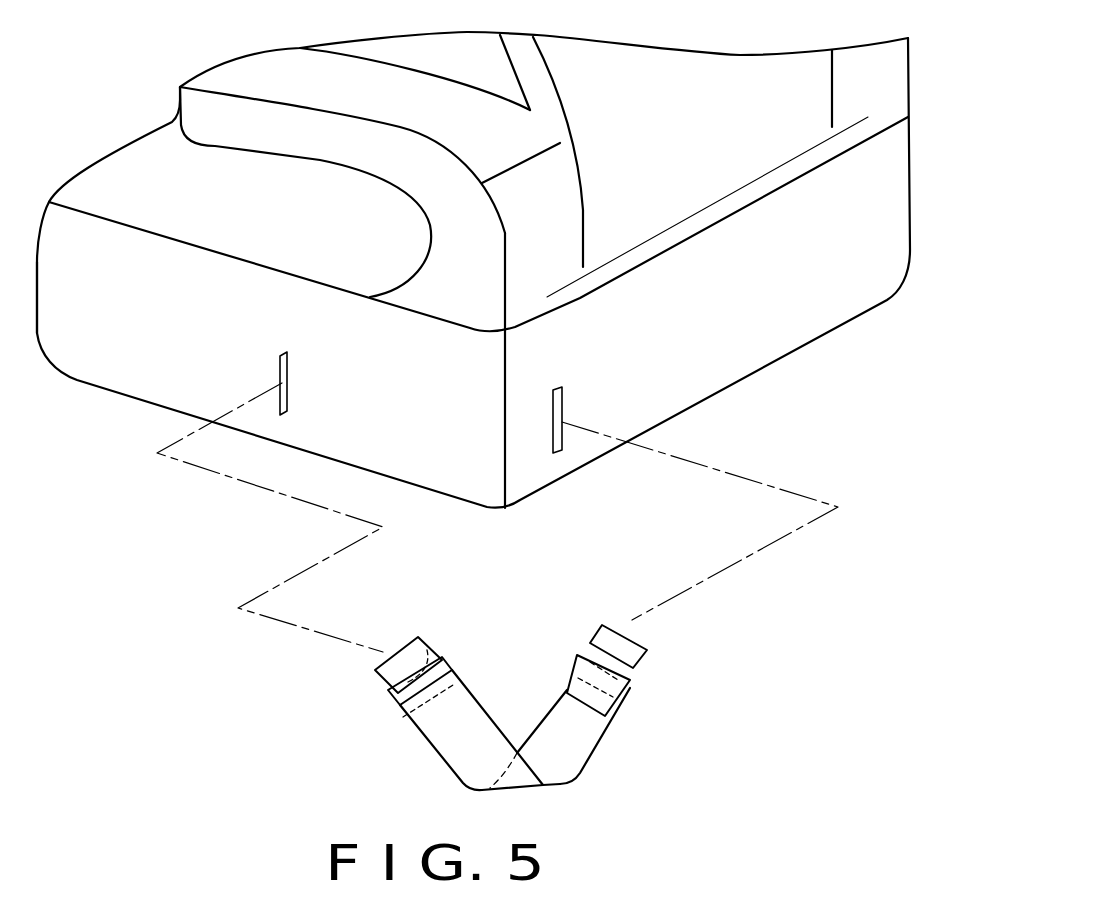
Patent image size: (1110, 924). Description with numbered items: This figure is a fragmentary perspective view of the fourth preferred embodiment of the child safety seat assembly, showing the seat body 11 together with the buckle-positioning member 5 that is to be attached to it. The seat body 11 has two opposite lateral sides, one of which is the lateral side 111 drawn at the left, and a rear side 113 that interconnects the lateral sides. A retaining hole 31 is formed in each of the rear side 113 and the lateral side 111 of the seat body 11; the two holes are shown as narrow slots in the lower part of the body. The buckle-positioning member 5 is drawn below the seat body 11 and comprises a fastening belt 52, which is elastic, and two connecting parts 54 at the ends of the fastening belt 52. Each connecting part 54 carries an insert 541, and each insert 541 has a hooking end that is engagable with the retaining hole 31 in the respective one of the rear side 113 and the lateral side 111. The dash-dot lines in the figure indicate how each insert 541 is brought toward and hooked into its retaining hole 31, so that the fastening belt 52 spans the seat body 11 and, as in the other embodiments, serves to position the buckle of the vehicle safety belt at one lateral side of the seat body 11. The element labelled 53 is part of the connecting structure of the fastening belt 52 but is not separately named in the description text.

The buckle-positioning member 5 is at (290, 672).
The seat body 11 is at (132, 380).
The lateral side 111 is at (62, 278).
The rear side 113 is at (732, 347).
The retaining hole 31 is at (268, 367).
The fastening belt 52 is at (523, 700).
The insertion arm 53 is at (578, 740).
The connecting part 54 is at (402, 693).
The insert 541 is at (408, 662).